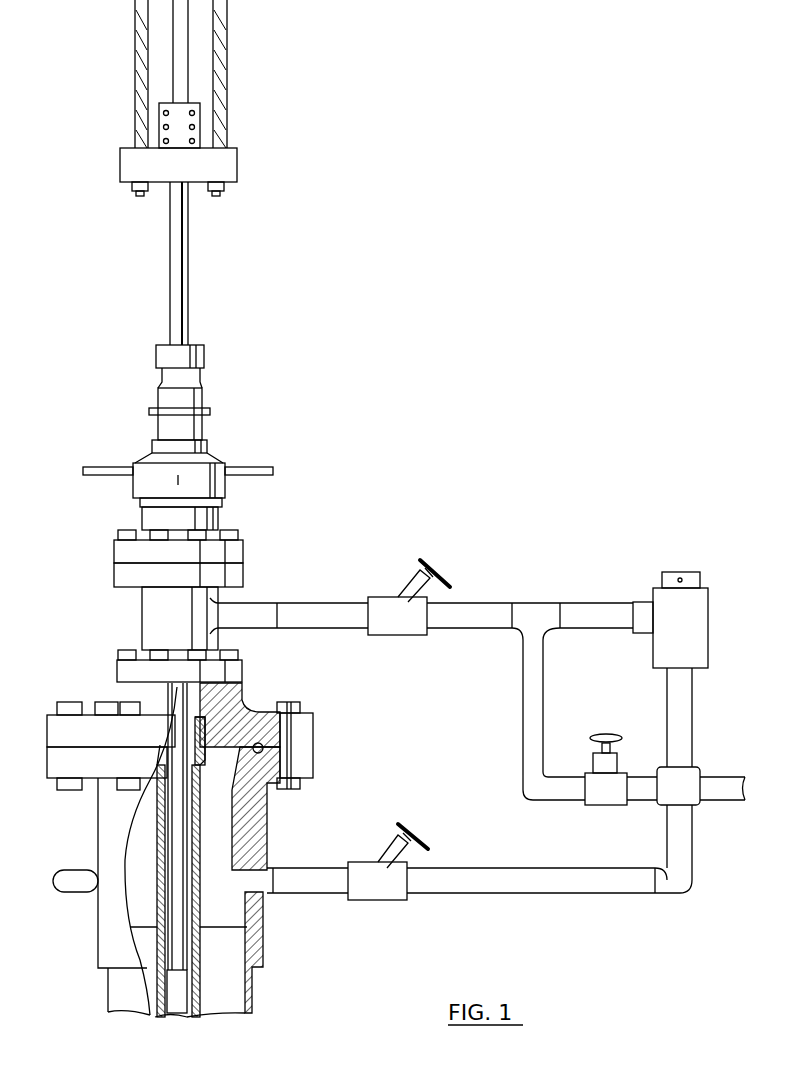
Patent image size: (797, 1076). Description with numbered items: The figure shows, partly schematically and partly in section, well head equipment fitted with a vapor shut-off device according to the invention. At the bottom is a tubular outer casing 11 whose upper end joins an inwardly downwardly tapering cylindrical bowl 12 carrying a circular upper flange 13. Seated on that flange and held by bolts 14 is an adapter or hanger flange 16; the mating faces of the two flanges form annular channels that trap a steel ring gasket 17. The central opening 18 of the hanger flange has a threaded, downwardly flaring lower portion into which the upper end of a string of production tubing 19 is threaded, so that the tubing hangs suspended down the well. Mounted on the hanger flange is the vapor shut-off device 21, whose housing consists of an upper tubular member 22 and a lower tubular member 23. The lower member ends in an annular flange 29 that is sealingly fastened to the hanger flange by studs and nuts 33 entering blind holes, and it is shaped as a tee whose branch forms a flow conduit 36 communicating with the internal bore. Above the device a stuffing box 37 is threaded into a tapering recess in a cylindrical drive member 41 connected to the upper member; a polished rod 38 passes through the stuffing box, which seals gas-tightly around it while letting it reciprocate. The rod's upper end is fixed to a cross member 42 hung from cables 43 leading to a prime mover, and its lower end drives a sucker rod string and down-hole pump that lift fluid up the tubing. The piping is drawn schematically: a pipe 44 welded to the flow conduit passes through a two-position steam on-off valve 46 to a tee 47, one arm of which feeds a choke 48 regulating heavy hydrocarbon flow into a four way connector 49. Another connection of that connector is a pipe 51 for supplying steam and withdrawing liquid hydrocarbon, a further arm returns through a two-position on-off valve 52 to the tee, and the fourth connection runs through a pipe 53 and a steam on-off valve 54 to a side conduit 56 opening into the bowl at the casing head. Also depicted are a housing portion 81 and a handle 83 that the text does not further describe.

The tubular outer casing 11 is at (253, 993).
The cylindrical bowl 12 is at (270, 845).
The circular upper flange 13 is at (58, 765).
The bolts 14 is at (297, 735).
The adapter or hanger flange 16 is at (58, 725).
The steel ring gasket 17 is at (255, 760).
The central opening 18 is at (240, 710).
The production tubing 19 is at (210, 838).
The vapor shut-off device 21 is at (104, 552).
The upper tubular member 22 is at (213, 520).
The lower tubular member 23 is at (157, 612).
The annular flange 29 is at (115, 670).
The studs and nuts 33 is at (125, 660).
The flow conduit 36 is at (245, 615).
The stuffing box 37 is at (205, 427).
The polished rod 38 is at (188, 283).
The cylindrical drive member 41 is at (210, 447).
The cross member 42 is at (237, 165).
The cables 43 is at (135, 42).
The pipe 44 is at (320, 608).
The two-position steam on-off valve 46 is at (405, 595).
The tee 47 is at (535, 620).
The choke 48 is at (693, 620).
The four way connector 49 is at (685, 795).
The pipe 51 is at (720, 790).
The two-position on-off valve 52 is at (597, 808).
The pipe 53 is at (528, 880).
The two-position steam on-off valve 54 is at (390, 850).
The side conduit 56 is at (265, 895).
The valve housing 81 is at (225, 483).
The handle 83 is at (263, 470).